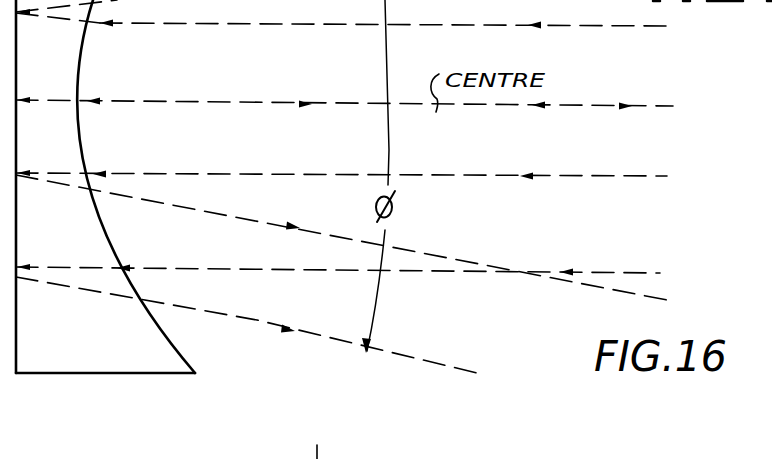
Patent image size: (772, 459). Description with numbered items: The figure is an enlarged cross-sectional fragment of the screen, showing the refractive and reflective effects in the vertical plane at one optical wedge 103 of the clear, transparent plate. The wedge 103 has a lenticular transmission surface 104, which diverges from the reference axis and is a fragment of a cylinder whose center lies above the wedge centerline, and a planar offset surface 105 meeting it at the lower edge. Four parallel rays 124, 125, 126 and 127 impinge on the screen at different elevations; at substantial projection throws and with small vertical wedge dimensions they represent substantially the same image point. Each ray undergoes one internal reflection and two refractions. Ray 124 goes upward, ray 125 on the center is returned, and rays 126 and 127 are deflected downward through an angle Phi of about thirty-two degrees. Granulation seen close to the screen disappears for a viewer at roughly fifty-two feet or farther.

The optical wedge 103 is at (200, 353).
The transmission surface 104 is at (82, 73).
The offset surface 105 is at (125, 375).
The ray 124 is at (190, 24).
The ray 125 is at (190, 100).
The ray 126 is at (200, 173).
The ray 127 is at (192, 267).